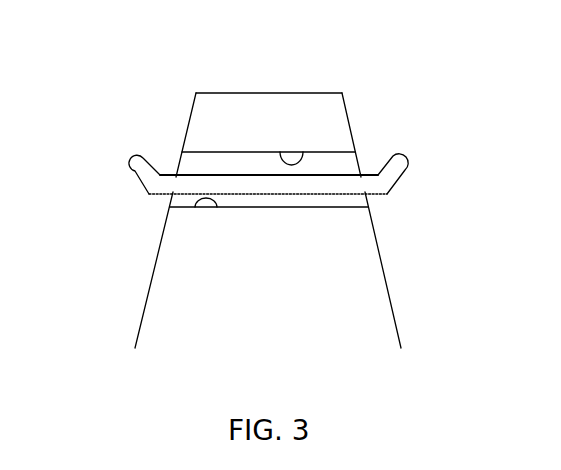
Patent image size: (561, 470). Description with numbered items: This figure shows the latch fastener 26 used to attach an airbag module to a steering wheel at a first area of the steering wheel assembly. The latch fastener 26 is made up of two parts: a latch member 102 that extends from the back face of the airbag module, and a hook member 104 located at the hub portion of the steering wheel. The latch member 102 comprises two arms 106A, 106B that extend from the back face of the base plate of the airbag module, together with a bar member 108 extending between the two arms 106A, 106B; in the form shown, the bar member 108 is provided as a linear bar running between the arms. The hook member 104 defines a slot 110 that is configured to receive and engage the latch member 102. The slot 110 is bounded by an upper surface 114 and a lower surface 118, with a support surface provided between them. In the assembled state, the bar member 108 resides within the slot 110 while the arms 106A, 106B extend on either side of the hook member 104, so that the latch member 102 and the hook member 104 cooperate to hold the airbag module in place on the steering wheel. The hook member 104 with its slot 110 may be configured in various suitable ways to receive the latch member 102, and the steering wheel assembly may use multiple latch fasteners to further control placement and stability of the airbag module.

The latch fastener 26 is at (375, 52).
The latch member 102 is at (120, 152).
The hook member 104 is at (385, 318).
The arm 106A is at (152, 180).
The arm 106B is at (390, 178).
The bar member 108 is at (363, 181).
The slot 110 is at (192, 165).
The upper surface 114 is at (303, 152).
The lower surface 118 is at (195, 207).